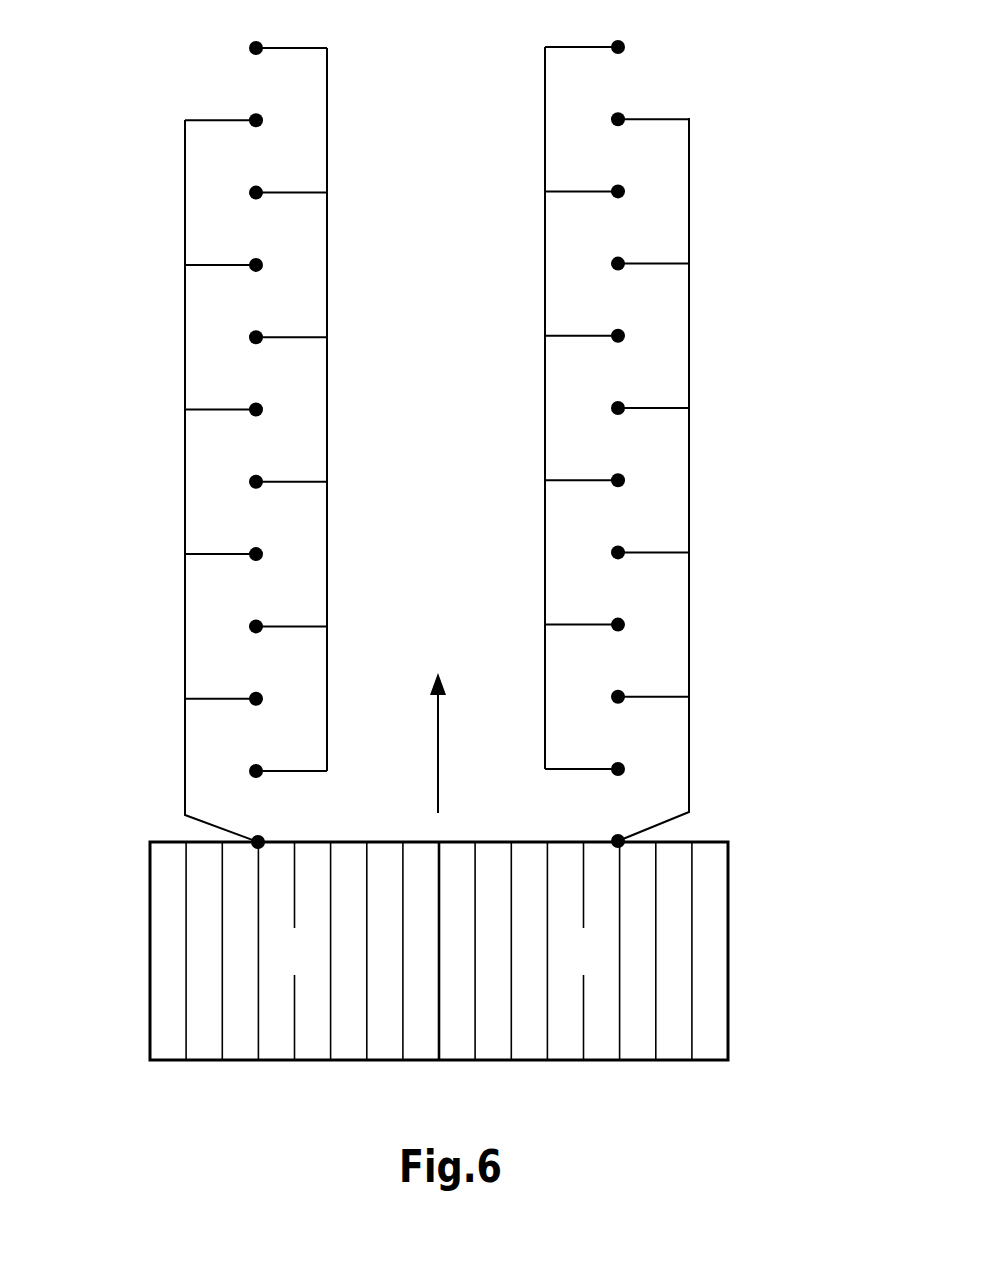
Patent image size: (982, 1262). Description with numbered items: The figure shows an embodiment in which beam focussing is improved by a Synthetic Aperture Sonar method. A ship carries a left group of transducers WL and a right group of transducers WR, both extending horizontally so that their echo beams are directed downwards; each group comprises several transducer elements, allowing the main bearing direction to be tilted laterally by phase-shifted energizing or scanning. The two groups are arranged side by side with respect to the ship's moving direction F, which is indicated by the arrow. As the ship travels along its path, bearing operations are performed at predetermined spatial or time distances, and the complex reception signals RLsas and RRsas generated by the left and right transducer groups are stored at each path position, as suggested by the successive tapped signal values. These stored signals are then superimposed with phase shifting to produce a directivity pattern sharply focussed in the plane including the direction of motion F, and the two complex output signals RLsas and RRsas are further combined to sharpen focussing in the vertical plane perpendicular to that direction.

The complex reception signal of the left transducer group RLsas is at (111, 482).
The complex reception signal of the right transducer group RRsas is at (764, 482).
The direction of ship motion F is at (451, 743).
The left group of transducers WL is at (294, 951).
The right group of transducers WR is at (583, 951).